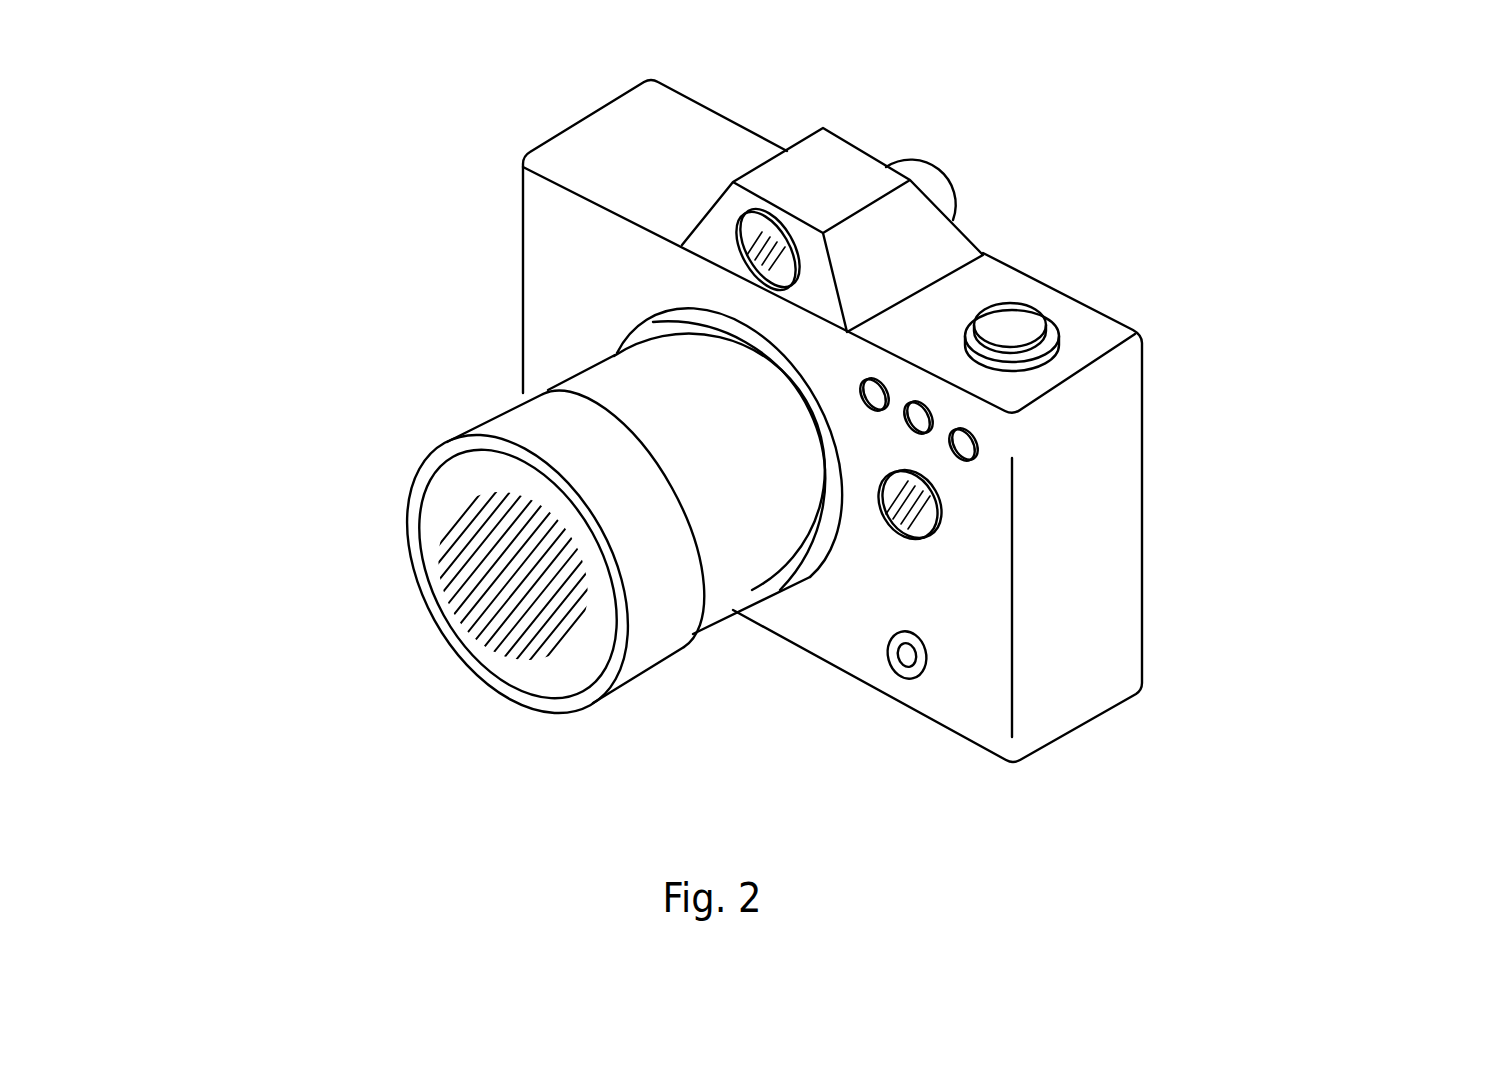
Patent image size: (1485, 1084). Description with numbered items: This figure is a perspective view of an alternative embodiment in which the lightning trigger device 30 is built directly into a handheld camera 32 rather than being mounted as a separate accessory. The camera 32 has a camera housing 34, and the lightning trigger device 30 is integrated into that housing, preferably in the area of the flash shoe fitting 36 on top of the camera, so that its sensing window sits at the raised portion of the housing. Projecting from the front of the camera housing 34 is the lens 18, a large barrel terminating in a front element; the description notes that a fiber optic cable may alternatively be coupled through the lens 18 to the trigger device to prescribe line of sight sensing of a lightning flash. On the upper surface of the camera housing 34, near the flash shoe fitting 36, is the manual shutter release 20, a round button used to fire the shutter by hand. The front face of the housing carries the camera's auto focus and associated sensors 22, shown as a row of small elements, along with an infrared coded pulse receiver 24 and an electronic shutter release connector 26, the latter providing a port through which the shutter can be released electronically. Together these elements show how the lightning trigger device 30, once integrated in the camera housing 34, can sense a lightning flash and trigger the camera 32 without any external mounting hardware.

The lens 18 is at (467, 528).
The manual shutter release 20 is at (1063, 318).
The auto focus and associated sensors 22 is at (887, 423).
The infrared coded pulse receiver 24 is at (945, 528).
The electronic shutter release connector 26 is at (928, 663).
The lightning trigger device 30 is at (728, 232).
The camera 32 is at (819, 409).
The camera housing 34 is at (900, 243).
The flash shoe fitting 36 is at (553, 307).